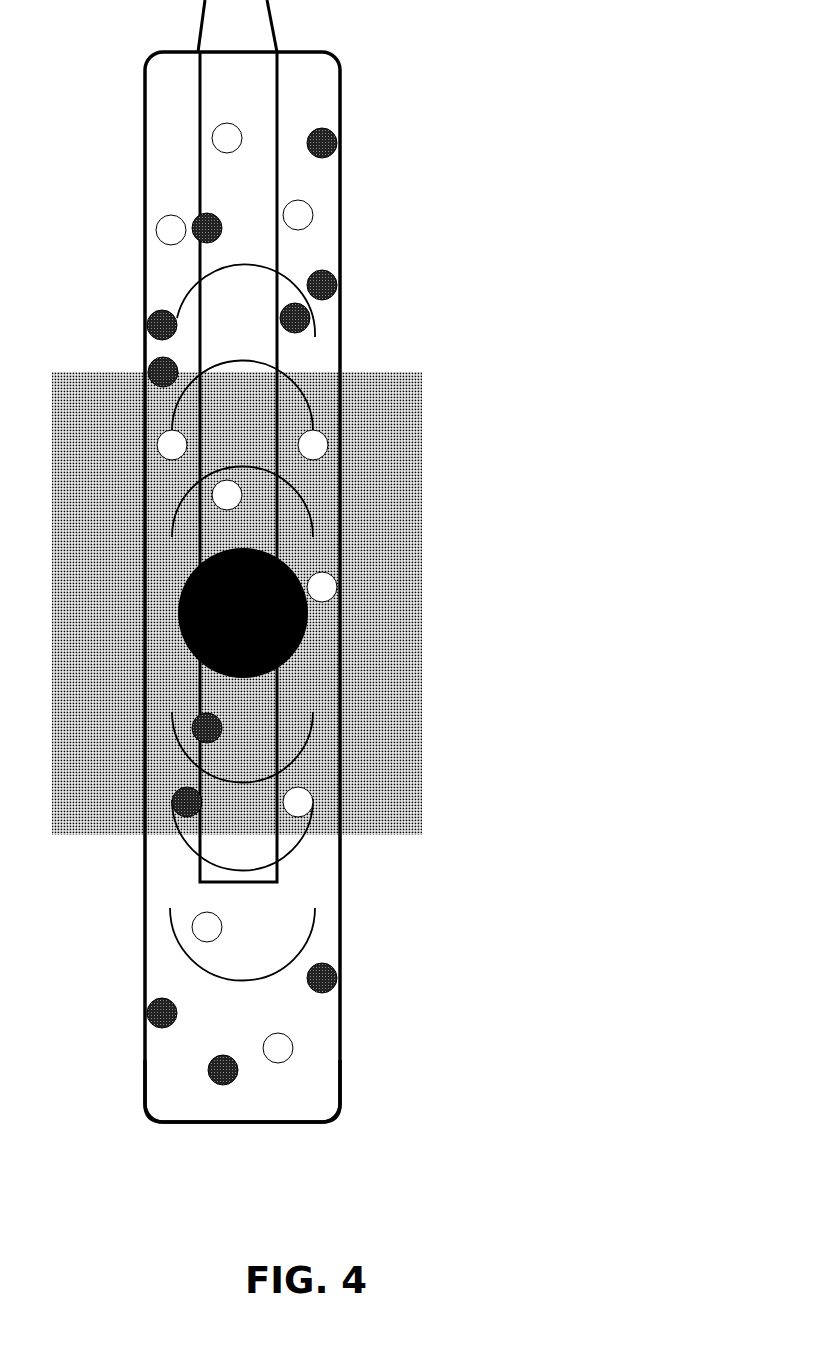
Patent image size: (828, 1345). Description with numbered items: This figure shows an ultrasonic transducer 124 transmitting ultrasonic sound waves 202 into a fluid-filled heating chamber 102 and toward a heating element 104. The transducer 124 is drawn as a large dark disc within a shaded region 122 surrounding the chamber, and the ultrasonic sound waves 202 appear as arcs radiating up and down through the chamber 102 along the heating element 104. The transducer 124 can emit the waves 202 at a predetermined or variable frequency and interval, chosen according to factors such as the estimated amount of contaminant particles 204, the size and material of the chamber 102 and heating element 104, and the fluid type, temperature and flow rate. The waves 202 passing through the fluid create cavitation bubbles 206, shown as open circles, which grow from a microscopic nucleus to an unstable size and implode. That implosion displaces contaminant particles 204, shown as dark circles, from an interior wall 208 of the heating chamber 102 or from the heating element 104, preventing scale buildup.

The heating chamber 102 is at (340, 1033).
The heating element 104 is at (278, 22).
The treatment region 122 is at (422, 750).
The ultrasonic transducer 124 is at (303, 635).
The ultrasonic sound waves 202 is at (303, 493).
The contaminant particles 204 is at (350, 145).
The cavitation bubbles 206 is at (313, 213).
The interior wall 208 is at (147, 1078).